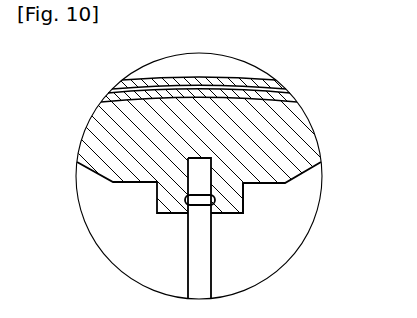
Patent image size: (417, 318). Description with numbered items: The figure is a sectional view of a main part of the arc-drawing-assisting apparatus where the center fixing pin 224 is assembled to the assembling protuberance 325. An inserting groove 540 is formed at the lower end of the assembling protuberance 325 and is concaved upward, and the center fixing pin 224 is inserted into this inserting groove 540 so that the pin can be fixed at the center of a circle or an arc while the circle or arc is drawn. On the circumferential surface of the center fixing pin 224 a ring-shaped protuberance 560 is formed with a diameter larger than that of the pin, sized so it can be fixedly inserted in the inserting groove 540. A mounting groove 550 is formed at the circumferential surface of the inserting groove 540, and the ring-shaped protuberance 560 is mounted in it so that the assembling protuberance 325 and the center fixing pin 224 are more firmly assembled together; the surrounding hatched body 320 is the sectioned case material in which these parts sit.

The hatched body 320 is at (101, 130).
The inserting groove 540 is at (253, 148).
The assembling protuberance 325 is at (232, 201).
The center fixing pin 224 is at (208, 249).
The mounting groove 550 is at (185, 200).
The ring-shaped protuberance 560 is at (178, 214).